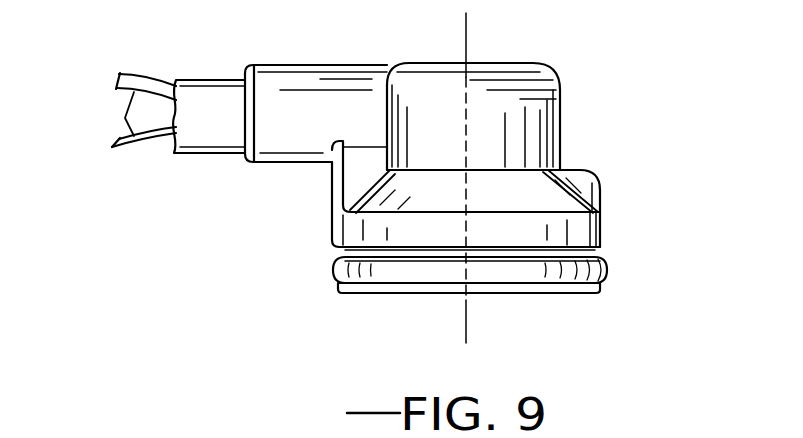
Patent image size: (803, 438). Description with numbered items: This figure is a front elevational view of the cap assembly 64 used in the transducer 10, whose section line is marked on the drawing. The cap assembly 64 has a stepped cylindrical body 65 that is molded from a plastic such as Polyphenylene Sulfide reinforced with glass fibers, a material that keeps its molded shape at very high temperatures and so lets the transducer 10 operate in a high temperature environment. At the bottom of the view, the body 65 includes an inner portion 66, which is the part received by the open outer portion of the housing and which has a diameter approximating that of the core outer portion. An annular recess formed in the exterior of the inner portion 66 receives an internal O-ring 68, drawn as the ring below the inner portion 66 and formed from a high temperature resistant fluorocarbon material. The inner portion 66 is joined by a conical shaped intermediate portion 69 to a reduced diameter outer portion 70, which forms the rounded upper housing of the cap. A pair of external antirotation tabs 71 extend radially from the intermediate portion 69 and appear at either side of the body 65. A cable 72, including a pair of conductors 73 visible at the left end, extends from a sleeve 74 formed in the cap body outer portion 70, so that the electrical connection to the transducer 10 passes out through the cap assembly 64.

The transducer 10 is at (430, 26).
The cap assembly 64 is at (397, 153).
The stepped cylindrical body 65 is at (543, 120).
The inner portion 66 is at (610, 227).
The internal O-ring 68 is at (607, 268).
The conical shaped intermediate portion 69 is at (537, 170).
The reduced diameter outer portion 70 is at (540, 93).
The external antirotation tabs 71 is at (357, 173).
The cable 72 is at (203, 97).
The conductors 73 is at (123, 118).
The sleeve 74 is at (303, 64).